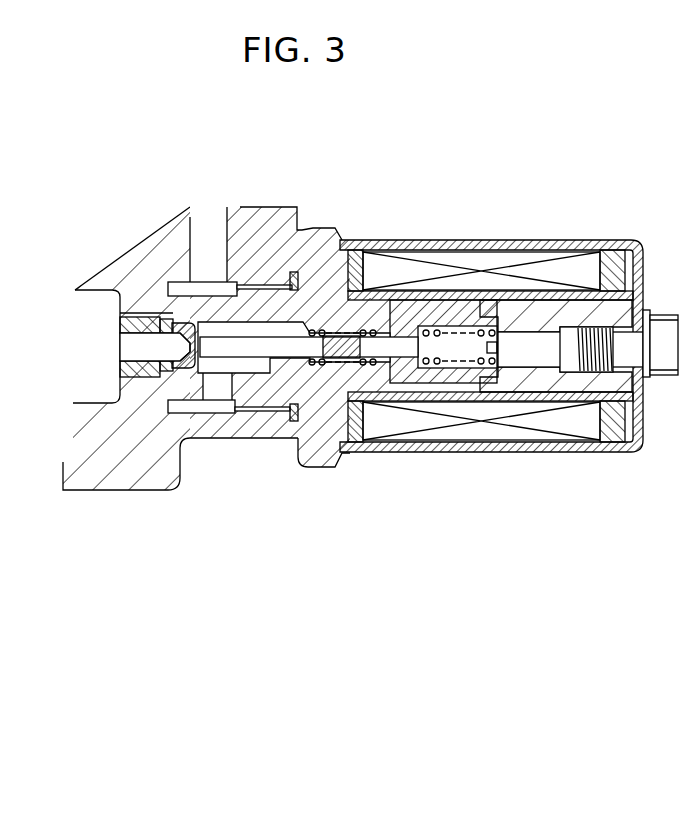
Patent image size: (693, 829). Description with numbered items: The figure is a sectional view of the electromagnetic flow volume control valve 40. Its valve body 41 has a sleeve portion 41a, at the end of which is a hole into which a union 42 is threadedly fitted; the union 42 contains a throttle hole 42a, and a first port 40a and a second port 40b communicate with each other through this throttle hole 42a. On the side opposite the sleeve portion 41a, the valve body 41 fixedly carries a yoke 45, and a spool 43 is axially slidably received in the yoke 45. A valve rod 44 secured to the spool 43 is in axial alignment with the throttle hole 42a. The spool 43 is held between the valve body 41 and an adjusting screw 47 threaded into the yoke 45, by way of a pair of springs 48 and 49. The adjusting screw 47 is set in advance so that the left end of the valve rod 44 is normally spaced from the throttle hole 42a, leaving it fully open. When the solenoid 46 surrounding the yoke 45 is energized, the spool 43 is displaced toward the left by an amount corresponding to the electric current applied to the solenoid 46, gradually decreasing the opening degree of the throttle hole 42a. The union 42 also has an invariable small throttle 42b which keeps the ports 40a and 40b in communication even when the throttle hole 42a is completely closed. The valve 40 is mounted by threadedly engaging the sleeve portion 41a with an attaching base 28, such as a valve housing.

The attaching base 28 is at (130, 483).
The flow control valve 40 is at (359, 330).
The first port 40a is at (126, 337).
The second port 40b is at (218, 296).
The valve body 41 is at (318, 240).
The sleeve portion 41a is at (195, 392).
The union 42 is at (122, 376).
The throttle hole 42a is at (160, 348).
The invariable small throttle 42b is at (172, 335).
The spool 43 is at (418, 373).
The valve rod 44 is at (218, 358).
The yoke 45 is at (540, 377).
The solenoid 46 is at (560, 263).
The adjusting screw 47 is at (555, 357).
The spring 48 is at (312, 365).
The spring 49 is at (440, 367).